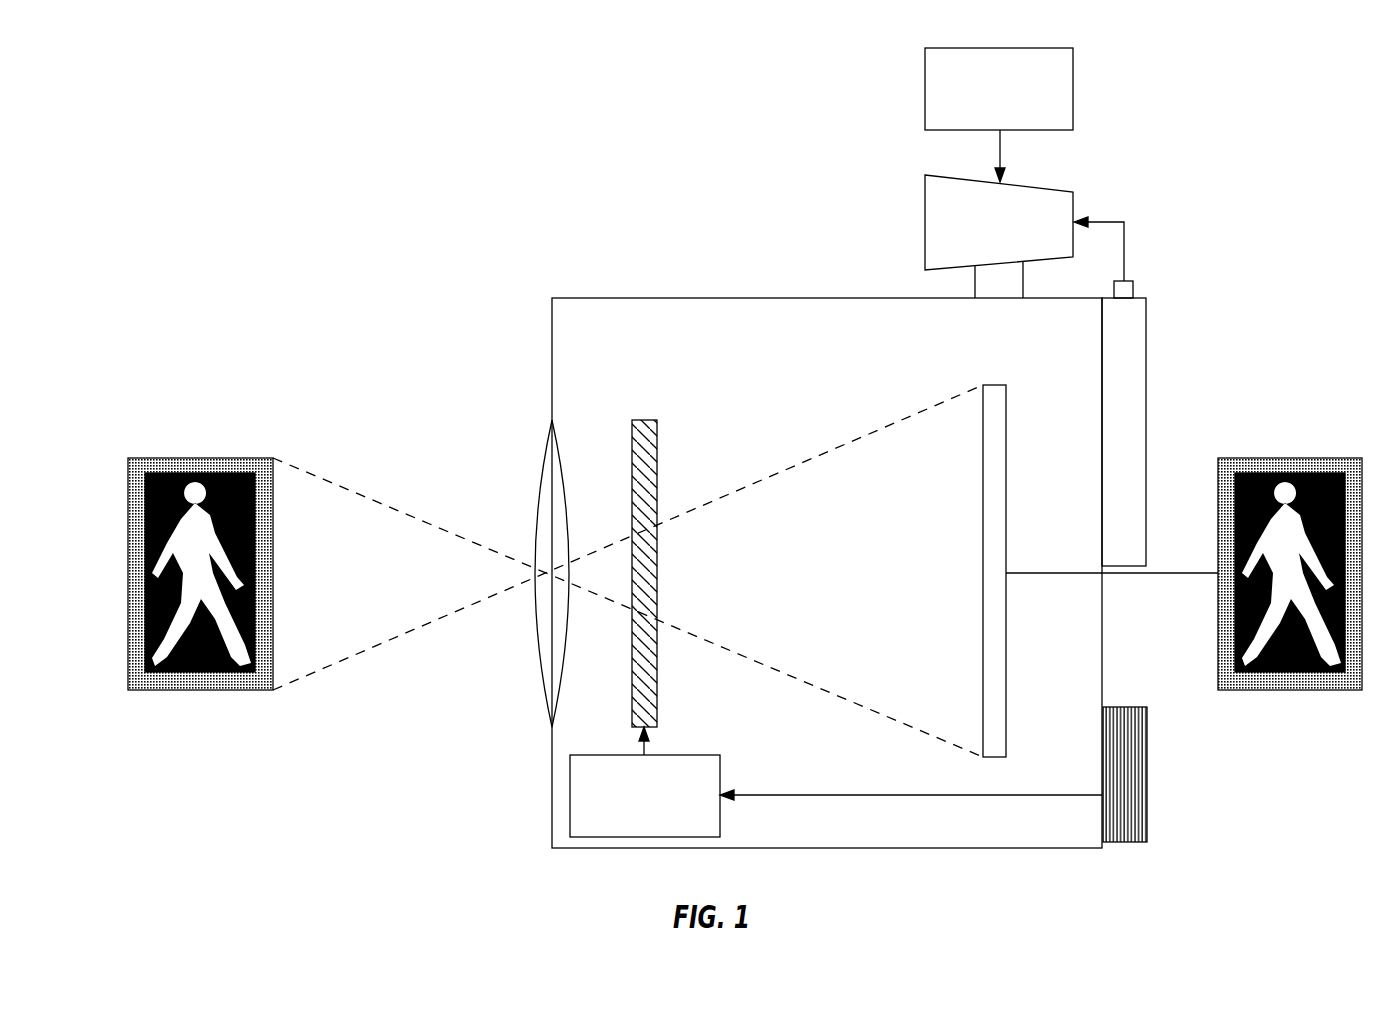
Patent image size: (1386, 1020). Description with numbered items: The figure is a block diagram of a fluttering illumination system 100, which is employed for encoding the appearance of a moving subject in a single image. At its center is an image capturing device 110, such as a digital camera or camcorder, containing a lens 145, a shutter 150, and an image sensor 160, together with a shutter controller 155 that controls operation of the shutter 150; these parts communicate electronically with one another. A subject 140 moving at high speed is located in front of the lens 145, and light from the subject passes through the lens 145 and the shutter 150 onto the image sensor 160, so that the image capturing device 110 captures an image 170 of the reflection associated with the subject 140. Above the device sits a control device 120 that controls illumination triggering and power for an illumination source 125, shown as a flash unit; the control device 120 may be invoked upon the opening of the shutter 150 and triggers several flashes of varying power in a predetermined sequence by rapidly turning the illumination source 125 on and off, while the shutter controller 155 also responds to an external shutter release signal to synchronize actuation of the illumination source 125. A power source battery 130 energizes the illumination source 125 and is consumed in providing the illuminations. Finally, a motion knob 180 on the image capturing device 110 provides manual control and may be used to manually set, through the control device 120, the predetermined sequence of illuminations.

The fluttering illumination system 100 is at (505, 92).
The image capturing device 110 is at (621, 298).
The control device 120 is at (925, 90).
The illumination source 125 is at (925, 222).
The power source battery 130 is at (1147, 367).
The subject 140 is at (165, 458).
The lens 145 is at (540, 450).
The shutter 150 is at (645, 420).
The shutter controller 155 is at (720, 775).
The image sensor 160 is at (1000, 385).
The image 170 is at (1268, 458).
The motion knob 180 is at (1122, 707).